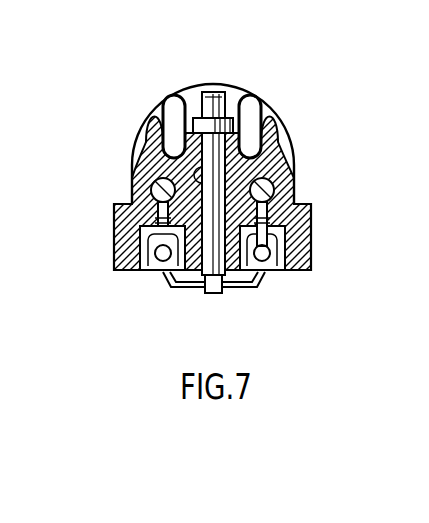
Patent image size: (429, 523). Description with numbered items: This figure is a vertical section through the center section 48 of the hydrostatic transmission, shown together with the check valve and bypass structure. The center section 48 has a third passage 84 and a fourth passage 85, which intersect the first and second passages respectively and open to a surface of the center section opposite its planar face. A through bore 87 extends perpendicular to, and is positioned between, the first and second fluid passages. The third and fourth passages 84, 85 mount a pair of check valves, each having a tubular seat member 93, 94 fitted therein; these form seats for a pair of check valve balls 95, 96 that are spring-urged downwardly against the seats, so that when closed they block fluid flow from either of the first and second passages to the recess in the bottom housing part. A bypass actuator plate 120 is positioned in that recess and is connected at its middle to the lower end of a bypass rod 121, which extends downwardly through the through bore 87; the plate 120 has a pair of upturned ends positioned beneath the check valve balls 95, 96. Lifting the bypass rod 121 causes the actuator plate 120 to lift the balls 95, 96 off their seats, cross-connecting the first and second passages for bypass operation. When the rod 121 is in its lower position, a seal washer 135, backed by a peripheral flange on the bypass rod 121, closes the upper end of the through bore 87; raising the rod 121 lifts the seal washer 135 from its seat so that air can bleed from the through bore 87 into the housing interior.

The center section 48 is at (287, 128).
The third passage 84 is at (114, 250).
The fourth passage 85 is at (311, 232).
The through bore 87 is at (202, 152).
The tubular seat member 93 is at (150, 270).
The tubular seat member 94 is at (268, 268).
The check valve ball 95 is at (152, 270).
The check valve ball 96 is at (285, 247).
The bypass actuator plate 120 is at (243, 278).
The bypass rod 121 is at (163, 133).
The seal washer 135 is at (237, 128).